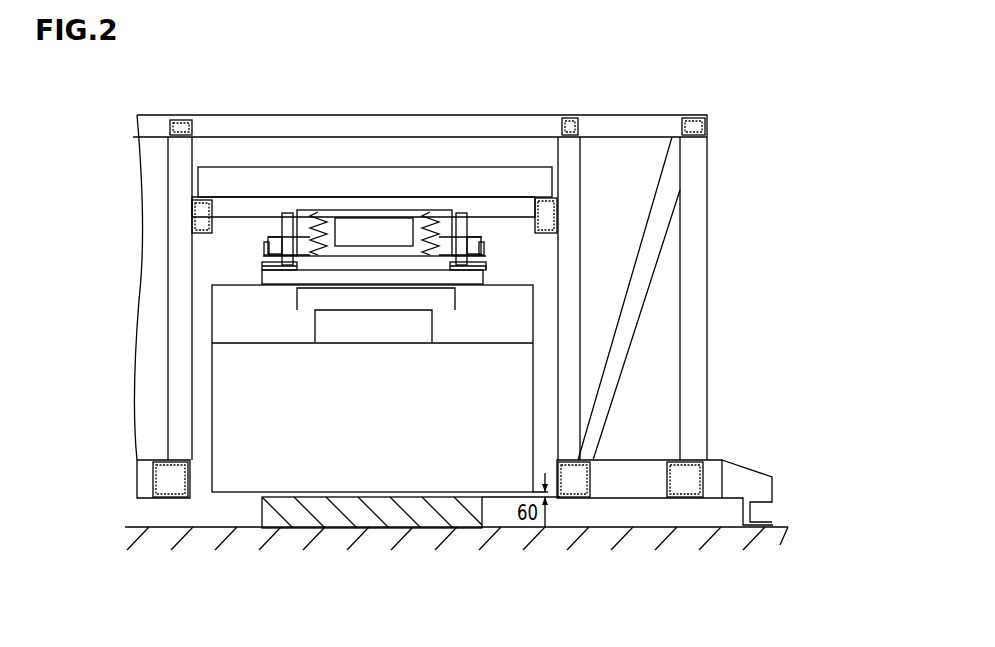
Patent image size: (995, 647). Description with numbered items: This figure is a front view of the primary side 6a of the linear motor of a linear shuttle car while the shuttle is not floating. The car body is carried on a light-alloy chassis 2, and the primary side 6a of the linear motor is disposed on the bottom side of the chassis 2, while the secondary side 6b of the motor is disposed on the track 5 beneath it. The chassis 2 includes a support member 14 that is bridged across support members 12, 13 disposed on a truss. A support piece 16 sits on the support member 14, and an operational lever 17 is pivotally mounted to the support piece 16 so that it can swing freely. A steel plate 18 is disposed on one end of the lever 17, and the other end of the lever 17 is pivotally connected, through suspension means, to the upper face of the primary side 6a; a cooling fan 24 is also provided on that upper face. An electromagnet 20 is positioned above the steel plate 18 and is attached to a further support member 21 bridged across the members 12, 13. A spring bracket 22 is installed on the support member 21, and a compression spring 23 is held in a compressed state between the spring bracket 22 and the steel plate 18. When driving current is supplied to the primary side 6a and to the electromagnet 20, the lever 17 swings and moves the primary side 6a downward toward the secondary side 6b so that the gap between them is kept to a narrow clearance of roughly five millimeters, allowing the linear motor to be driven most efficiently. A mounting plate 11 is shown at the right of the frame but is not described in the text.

The chassis 2 is at (556, 68).
The track 5 is at (612, 527).
The primary side 6a is at (252, 477).
The secondary side 6b is at (350, 520).
The mounting plate 11 is at (742, 478).
The support member 12 is at (192, 222).
The support member 13 is at (558, 208).
The support member 14 is at (253, 205).
The support piece 16 is at (302, 213).
The operational lever 17 is at (277, 222).
The steel plate 18 is at (290, 282).
The electromagnet 20 is at (362, 227).
The support member 21 is at (498, 178).
The spring bracket 22 is at (397, 205).
The compression spring 23 is at (270, 236).
The cooling fan 24 is at (313, 302).